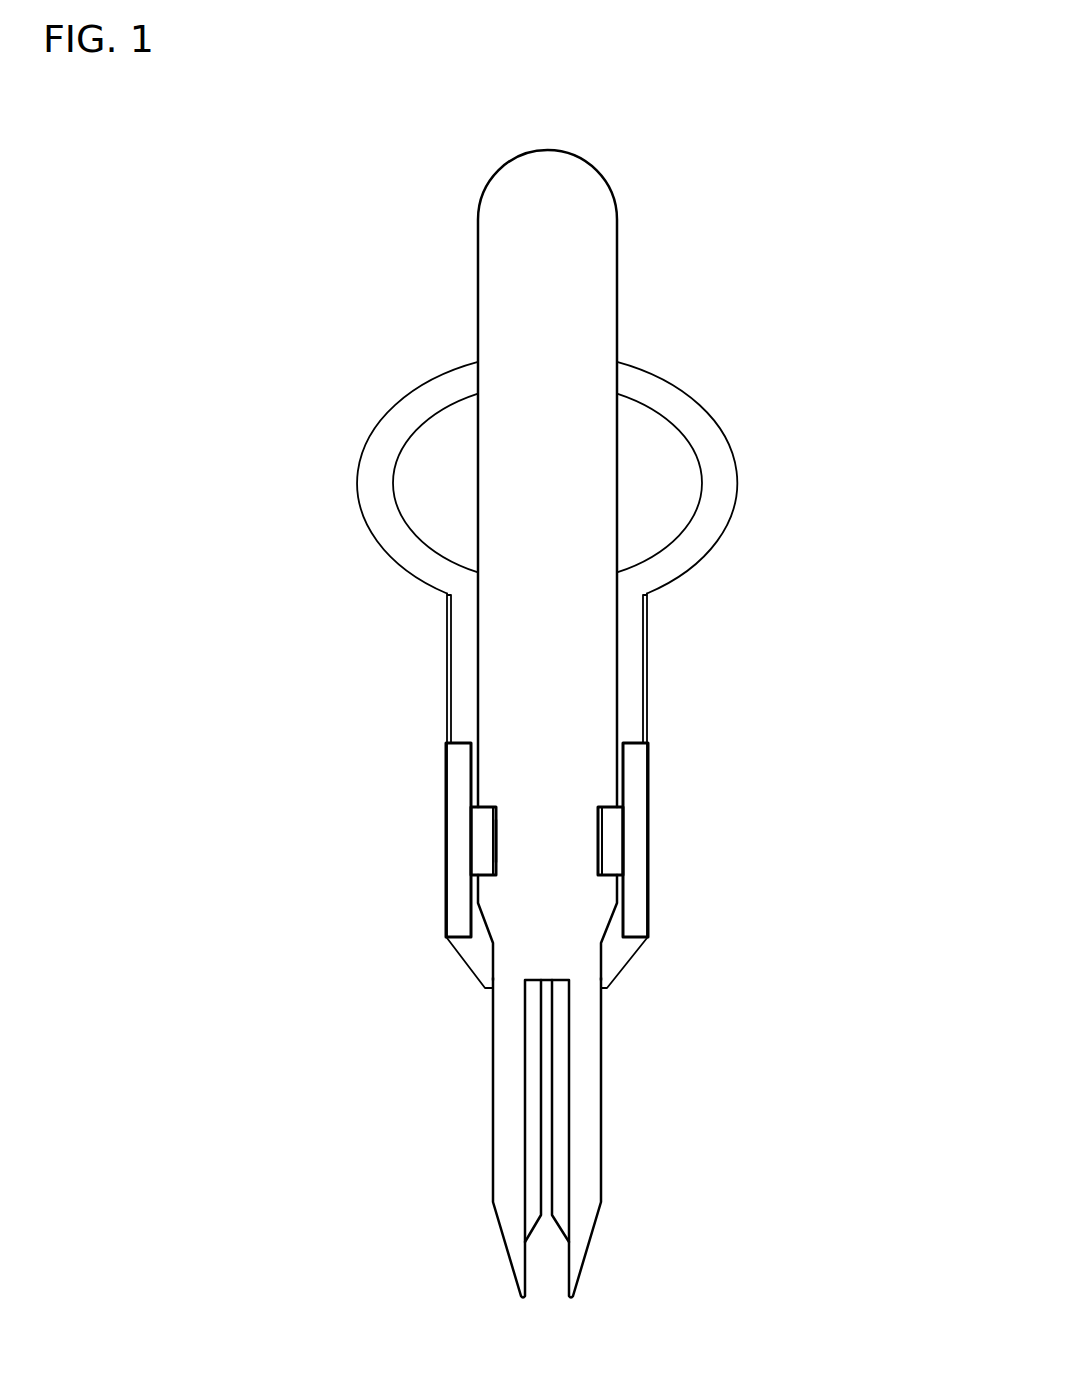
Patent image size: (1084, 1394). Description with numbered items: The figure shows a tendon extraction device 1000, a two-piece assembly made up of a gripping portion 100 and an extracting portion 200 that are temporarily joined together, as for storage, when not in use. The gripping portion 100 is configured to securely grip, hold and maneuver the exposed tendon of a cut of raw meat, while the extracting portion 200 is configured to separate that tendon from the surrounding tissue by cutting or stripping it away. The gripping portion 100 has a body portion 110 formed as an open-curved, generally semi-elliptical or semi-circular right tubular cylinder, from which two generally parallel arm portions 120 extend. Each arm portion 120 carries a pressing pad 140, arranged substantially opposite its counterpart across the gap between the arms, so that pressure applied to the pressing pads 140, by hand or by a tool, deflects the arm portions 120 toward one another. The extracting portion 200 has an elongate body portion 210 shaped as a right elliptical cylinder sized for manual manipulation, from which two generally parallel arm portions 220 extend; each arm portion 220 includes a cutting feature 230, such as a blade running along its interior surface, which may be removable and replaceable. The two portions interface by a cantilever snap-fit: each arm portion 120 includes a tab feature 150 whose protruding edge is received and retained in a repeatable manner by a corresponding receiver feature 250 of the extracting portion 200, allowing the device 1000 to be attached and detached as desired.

The tendon extraction device 1000 is at (905, 100).
The gripping portion 100 is at (348, 403).
The body portion 110 is at (378, 507).
The arm portions 120 is at (463, 707).
The pressing pad 140 is at (458, 787).
The tab feature 150 is at (478, 848).
The extracting portion 200 is at (448, 220).
The body portion 210 is at (588, 300).
The arm portions 220 is at (587, 1053).
The cutting feature 230 is at (560, 1101).
The receiver feature 250 is at (511, 828).